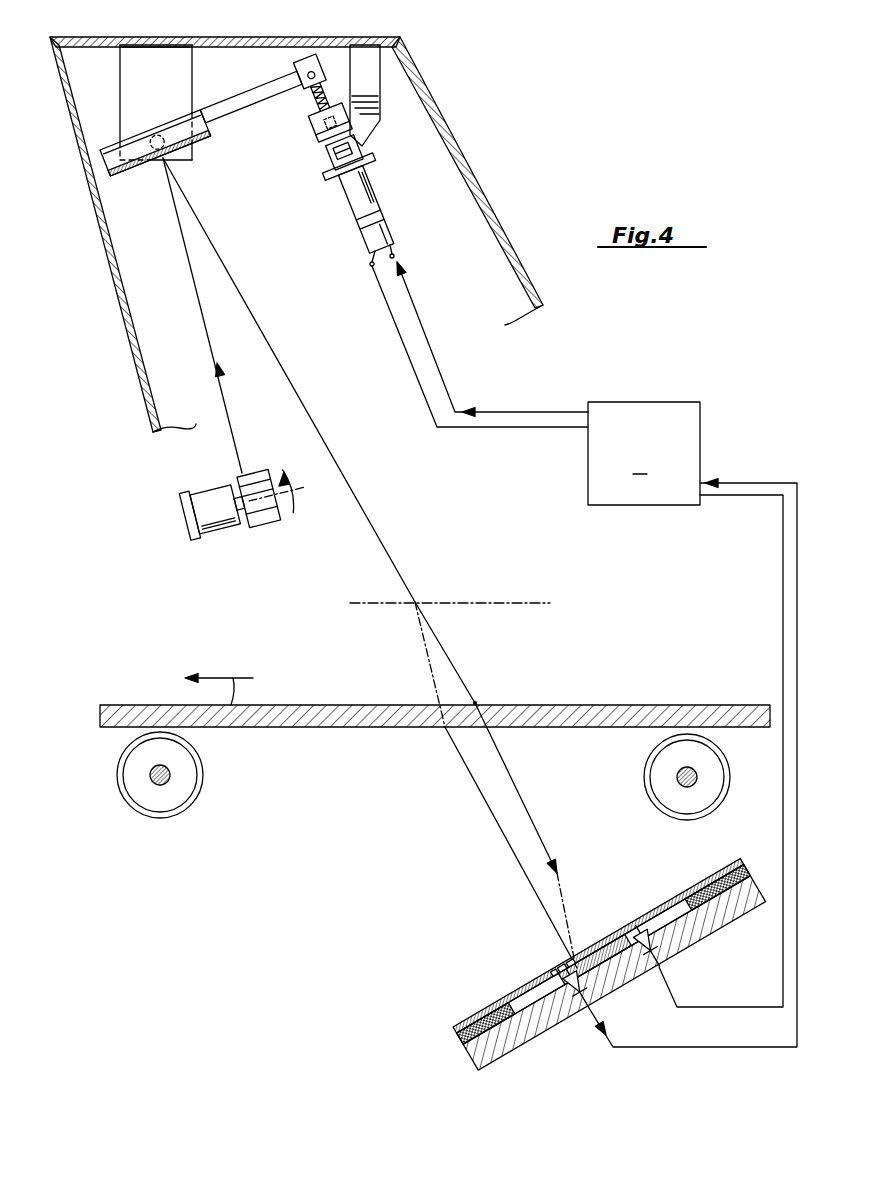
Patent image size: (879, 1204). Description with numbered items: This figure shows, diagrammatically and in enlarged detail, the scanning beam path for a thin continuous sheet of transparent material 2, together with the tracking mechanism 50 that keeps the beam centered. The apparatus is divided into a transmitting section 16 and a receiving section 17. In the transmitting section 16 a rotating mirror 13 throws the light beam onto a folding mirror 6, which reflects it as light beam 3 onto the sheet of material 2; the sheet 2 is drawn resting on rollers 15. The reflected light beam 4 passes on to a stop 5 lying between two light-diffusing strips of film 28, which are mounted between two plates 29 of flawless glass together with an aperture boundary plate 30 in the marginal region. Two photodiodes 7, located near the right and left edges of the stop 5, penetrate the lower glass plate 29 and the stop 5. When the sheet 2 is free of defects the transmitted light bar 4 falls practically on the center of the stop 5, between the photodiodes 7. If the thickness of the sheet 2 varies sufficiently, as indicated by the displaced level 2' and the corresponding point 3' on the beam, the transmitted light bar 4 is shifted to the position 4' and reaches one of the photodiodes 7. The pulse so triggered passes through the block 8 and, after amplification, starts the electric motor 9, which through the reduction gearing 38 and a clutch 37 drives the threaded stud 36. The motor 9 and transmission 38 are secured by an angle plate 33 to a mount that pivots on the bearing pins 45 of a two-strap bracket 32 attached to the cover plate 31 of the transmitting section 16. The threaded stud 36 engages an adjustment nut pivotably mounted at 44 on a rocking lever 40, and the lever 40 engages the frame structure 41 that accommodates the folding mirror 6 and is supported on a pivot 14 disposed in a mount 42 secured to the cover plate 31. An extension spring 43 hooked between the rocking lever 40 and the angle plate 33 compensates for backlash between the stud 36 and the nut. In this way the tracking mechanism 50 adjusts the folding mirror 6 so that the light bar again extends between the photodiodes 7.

The sheet of material 2 is at (435, 691).
The thickness variation of the sheet 2' is at (450, 577).
The light beam 3 is at (488, 680).
The nominal measuring point 3' is at (438, 577).
The transmitted light bar 4 is at (570, 963).
The displaced light bar position 4' is at (555, 972).
The stop 5 is at (562, 968).
The folding mirror 6 is at (159, 153).
The photodiodes 7 is at (612, 967).
The control unit 8 is at (583, 646).
The electric motor 9 is at (374, 230).
The rotating mirror 13 is at (259, 526).
The pivot 14 is at (157, 142).
The transport rollers 15 is at (180, 798).
The transmitting section 16 is at (513, 346).
The receiving section 17 is at (352, 911).
The light-diffusing strips of film 28 is at (604, 955).
The glass plates 29 is at (614, 973).
The aperture boundary plate 30 is at (601, 951).
The cover plate 31 is at (201, 47).
The two-strap bracket 32 is at (372, 92).
The angle plate 33 is at (345, 156).
The threaded stud 36 is at (324, 95).
The clutch 37 is at (342, 150).
The reduction gearing 38 is at (365, 210).
The rocking lever 40 is at (251, 97).
The frame structure 41 is at (155, 143).
The mount 42 is at (120, 87).
The extension spring 43 is at (319, 97).
The pivot of adjustment nut 44 is at (309, 71).
The bearing pins 45 is at (330, 122).
The tracking mechanism 50 is at (465, 130).